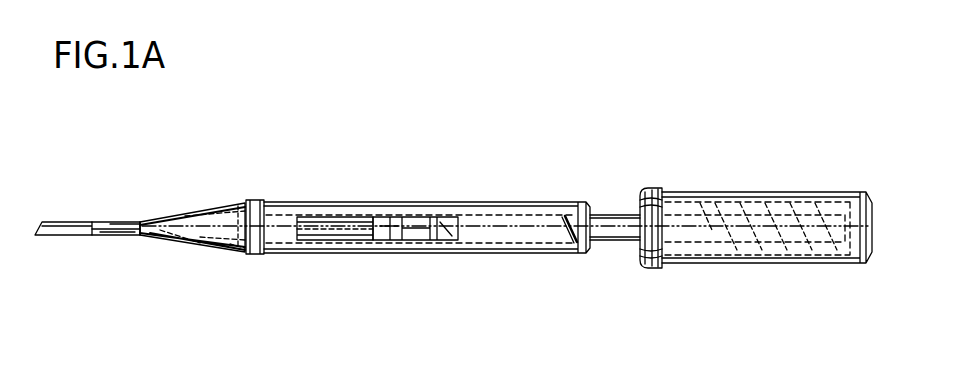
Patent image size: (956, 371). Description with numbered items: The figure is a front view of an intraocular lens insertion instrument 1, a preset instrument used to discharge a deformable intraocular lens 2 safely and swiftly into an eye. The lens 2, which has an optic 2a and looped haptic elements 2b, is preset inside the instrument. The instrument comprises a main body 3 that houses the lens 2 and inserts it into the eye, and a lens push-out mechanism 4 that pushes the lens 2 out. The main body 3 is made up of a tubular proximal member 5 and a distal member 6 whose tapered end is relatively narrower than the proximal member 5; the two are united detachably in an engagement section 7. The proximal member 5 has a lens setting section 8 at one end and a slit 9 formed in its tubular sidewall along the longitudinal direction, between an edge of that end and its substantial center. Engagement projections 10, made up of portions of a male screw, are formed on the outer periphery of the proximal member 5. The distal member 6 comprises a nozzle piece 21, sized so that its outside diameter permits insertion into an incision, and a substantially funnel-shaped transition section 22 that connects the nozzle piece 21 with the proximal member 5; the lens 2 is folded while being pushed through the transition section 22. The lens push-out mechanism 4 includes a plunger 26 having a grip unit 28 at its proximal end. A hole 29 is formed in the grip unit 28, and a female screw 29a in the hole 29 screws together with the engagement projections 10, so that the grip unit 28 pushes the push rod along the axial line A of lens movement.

The intraocular lens insertion instrument 1 is at (712, 147).
The intraocular lens 2 is at (219, 218).
The optic 2a is at (219, 254).
The looped haptic elements 2b is at (190, 212).
The main body 3 is at (378, 188).
The lens push-out mechanism 4 is at (727, 185).
The proximal member 5 is at (417, 200).
The distal member 6 is at (157, 213).
The engagement section 7 is at (260, 213).
The lens setting section 8 is at (241, 256).
The slit 9 is at (329, 218).
The engagement projections 10 is at (571, 212).
The nozzle piece 21 is at (72, 221).
The transition section 22 is at (181, 252).
The plunger 26 is at (476, 212).
The grip unit 28 is at (792, 192).
The hole 29 is at (690, 270).
The female screw 29a is at (757, 270).
The axial line of lens movement A is at (45, 221).